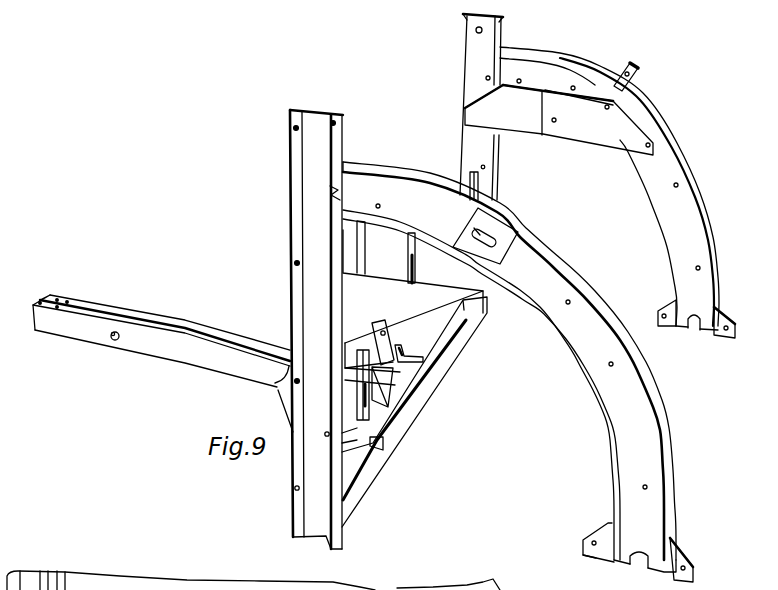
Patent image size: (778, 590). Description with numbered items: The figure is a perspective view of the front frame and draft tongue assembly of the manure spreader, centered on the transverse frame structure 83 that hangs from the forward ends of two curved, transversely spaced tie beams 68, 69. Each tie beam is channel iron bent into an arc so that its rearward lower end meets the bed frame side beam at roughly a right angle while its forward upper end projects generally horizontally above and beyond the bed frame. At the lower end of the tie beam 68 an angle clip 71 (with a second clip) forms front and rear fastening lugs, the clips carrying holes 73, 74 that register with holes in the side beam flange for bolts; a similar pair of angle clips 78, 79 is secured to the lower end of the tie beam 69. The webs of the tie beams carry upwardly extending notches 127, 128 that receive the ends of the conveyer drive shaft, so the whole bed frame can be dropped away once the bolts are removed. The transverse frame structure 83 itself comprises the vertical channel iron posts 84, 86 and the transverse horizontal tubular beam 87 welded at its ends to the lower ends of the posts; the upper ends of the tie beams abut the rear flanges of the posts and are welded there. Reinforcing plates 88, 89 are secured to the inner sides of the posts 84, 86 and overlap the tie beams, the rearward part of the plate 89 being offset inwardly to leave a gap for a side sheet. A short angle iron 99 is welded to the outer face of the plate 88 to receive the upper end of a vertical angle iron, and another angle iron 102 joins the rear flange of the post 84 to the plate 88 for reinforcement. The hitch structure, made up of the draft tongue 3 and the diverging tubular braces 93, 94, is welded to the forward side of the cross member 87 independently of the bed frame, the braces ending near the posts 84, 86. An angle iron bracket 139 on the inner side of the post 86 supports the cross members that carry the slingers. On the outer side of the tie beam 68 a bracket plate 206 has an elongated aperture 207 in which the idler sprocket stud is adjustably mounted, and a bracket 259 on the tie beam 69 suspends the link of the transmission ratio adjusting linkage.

The draft tongue 3 is at (161, 356).
The tie beam 68 is at (534, 376).
The tie beam 69 is at (621, 205).
The angle clip 71 is at (602, 561).
The hole 73 is at (592, 541).
The hole 74 is at (692, 566).
The angle clip 78 is at (664, 326).
The angle clip 79 is at (718, 336).
The transverse frame structure 83 is at (543, 318).
The vertical channel iron post 84 is at (293, 222).
The vertical channel iron post 86 is at (503, 35).
The transverse horizontal tubular beam 87 is at (362, 470).
The reinforcing plate 88 is at (413, 267).
The reinforcing plate 89 is at (570, 135).
The tubular brace 93 is at (286, 404).
The tubular brace 94 is at (427, 321).
The angle iron 99 is at (415, 263).
The angle iron 102 is at (358, 242).
The notch 127 is at (640, 571).
The notch 128 is at (693, 334).
The angle iron bracket 139 is at (480, 189).
The bracket plate 206 is at (496, 255).
The elongated aperture 207 is at (475, 231).
The bracket 259 is at (638, 80).